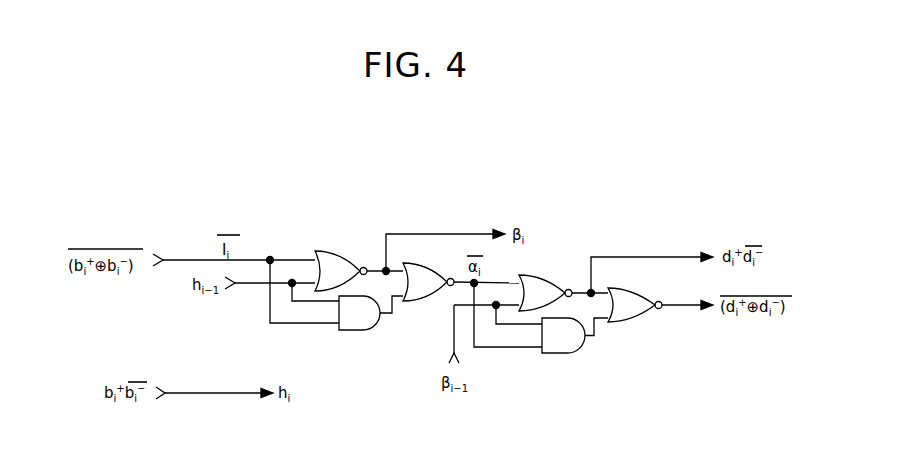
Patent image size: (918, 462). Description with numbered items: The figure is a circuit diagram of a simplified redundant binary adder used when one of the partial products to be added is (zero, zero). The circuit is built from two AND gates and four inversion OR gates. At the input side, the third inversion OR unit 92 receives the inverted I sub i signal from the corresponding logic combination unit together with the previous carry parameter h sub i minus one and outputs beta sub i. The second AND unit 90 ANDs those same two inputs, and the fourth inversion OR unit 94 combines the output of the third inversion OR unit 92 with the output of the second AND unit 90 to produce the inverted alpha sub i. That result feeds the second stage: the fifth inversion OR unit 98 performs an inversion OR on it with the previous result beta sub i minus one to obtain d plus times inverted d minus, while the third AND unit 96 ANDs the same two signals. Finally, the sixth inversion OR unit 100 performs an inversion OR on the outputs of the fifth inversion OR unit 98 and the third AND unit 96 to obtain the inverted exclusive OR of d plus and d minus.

The second AND unit 90 is at (353, 333).
The third inversion OR unit 92 is at (334, 250).
The fourth inversion OR unit 94 is at (437, 266).
The third AND unit 96 is at (565, 355).
The fifth inversion OR unit 98 is at (540, 275).
The sixth inversion OR unit 100 is at (637, 288).